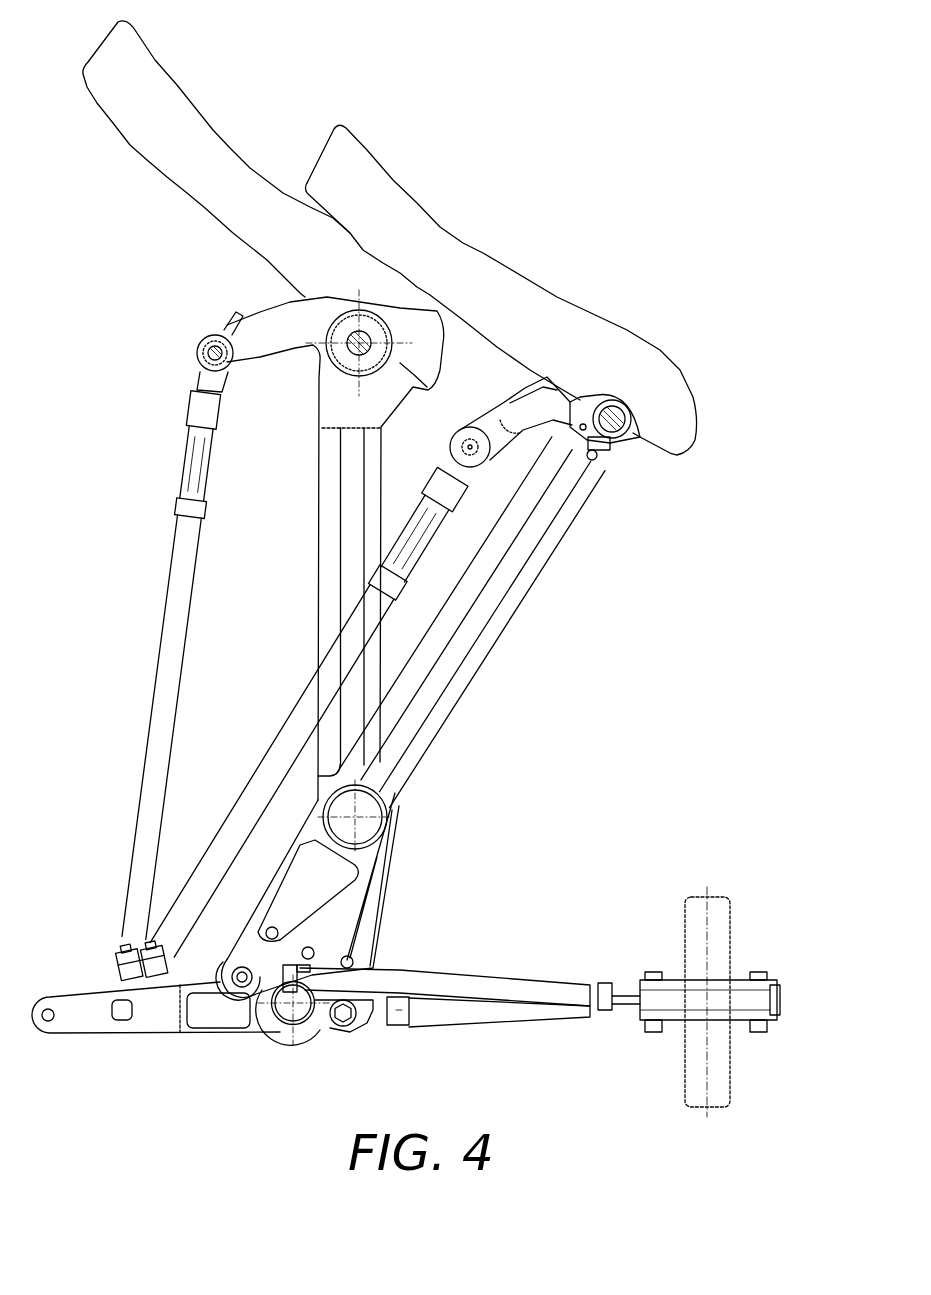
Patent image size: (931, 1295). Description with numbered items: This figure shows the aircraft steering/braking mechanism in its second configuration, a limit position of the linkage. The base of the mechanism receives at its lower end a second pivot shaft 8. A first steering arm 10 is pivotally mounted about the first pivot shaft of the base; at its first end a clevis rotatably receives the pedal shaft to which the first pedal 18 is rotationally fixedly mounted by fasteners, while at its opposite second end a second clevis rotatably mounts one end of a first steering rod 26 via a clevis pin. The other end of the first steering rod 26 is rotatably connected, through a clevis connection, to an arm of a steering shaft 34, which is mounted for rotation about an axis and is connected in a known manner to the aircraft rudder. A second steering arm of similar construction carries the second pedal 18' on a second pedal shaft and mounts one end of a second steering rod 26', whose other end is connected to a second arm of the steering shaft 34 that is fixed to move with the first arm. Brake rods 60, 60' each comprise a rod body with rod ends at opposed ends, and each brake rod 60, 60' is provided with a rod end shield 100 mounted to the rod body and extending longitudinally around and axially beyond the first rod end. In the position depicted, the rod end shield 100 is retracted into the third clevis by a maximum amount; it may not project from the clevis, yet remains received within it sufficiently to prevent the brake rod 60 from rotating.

The second pedal 18' is at (216, 159).
The first pedal 18 is at (501, 290).
The rod end shield 100 is at (230, 316).
The first steering arm 10 is at (484, 650).
The brake rod 60 is at (307, 713).
The second brake rod 60' is at (155, 665).
The first steering rod 26 is at (540, 978).
The second steering rod 26' is at (488, 1038).
The steering shaft 34 is at (723, 912).
The second pivot shaft 8 is at (300, 1025).